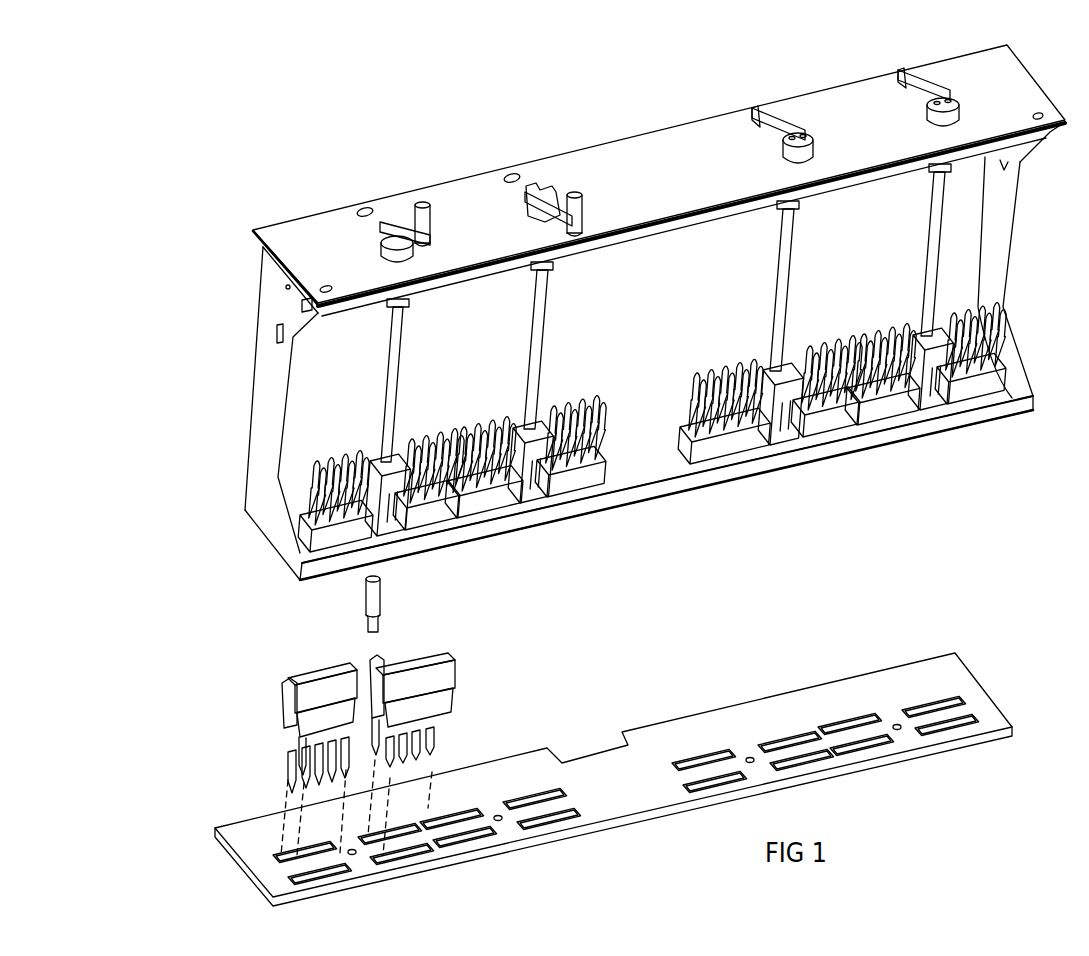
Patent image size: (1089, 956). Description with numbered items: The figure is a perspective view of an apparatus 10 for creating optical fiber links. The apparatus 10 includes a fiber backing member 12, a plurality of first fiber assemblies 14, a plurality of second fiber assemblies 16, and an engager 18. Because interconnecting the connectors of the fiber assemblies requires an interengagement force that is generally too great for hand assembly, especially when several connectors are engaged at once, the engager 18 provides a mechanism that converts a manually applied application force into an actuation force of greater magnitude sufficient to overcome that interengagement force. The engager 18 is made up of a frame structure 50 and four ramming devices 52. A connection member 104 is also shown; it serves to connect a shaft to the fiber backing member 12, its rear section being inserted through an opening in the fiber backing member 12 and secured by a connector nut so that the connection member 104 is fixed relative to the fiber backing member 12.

The apparatus 10 is at (253, 98).
The fiber backing member 12 is at (957, 682).
The first fiber assemblies 14 is at (290, 705).
The second fiber assemblies 16 is at (427, 525).
The engager 18 is at (180, 319).
The frame structure 50 is at (262, 453).
The ramming devices 52 is at (431, 568).
The connection member 104 is at (367, 600).